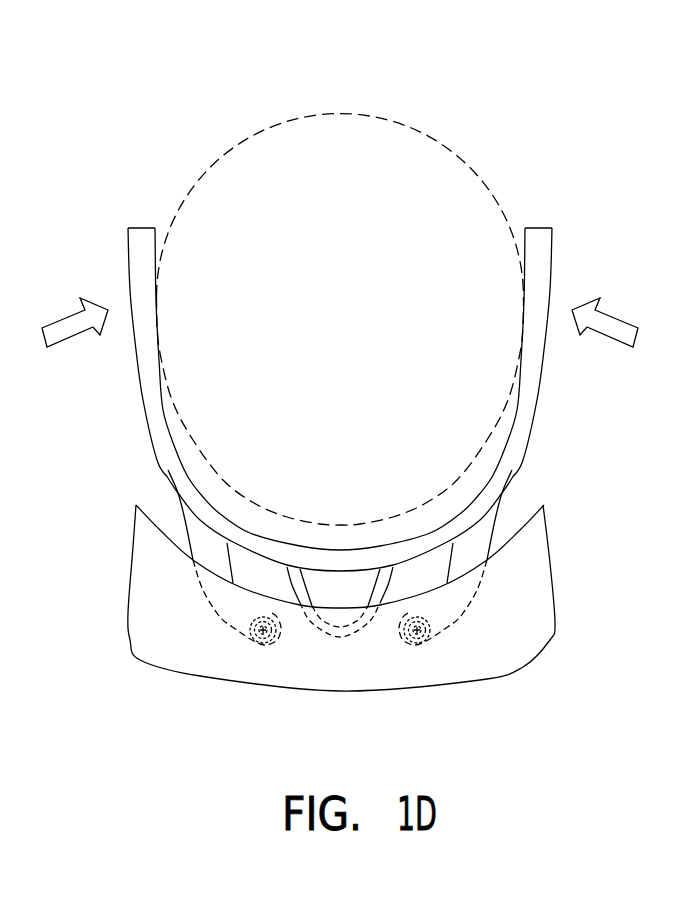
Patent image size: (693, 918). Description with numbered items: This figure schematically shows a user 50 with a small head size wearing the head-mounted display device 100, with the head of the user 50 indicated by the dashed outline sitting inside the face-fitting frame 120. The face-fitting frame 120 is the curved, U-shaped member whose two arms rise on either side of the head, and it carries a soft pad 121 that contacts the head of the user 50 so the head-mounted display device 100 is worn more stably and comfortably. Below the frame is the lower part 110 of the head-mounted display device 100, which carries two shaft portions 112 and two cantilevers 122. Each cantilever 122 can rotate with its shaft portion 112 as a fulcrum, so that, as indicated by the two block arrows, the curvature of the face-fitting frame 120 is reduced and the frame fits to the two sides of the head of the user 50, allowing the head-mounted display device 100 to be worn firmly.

The user 50 is at (479, 175).
The head-mounted display device 100 is at (607, 408).
The base 110 is at (547, 540).
The shaft portion 112 is at (263, 643).
The face-fitting frame 120 is at (352, 405).
The soft pad 121 is at (197, 462).
The cantilever 122 is at (223, 597).